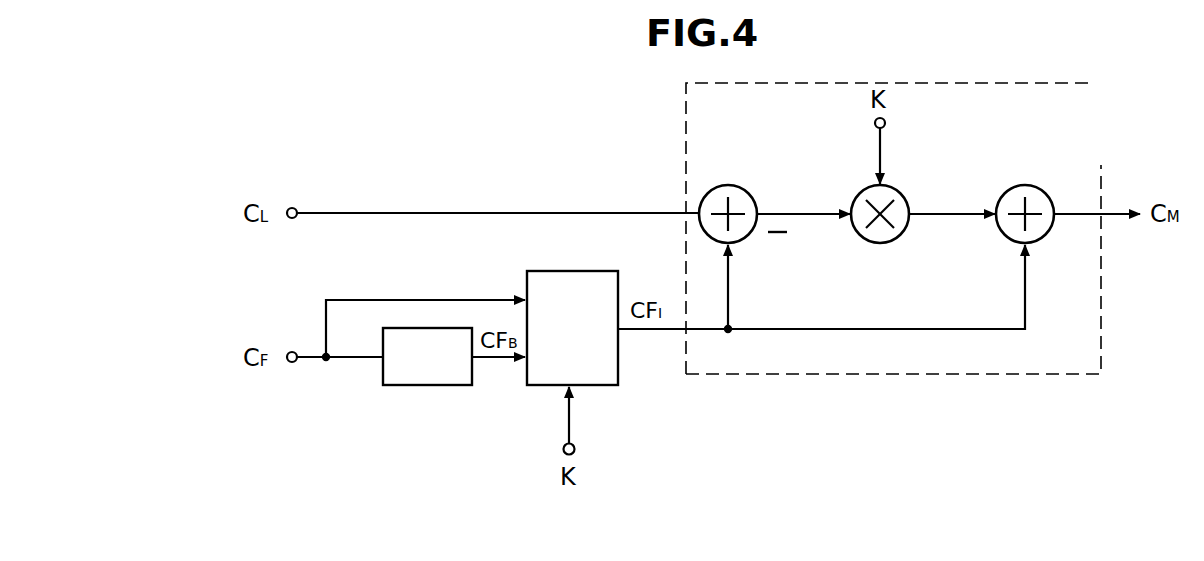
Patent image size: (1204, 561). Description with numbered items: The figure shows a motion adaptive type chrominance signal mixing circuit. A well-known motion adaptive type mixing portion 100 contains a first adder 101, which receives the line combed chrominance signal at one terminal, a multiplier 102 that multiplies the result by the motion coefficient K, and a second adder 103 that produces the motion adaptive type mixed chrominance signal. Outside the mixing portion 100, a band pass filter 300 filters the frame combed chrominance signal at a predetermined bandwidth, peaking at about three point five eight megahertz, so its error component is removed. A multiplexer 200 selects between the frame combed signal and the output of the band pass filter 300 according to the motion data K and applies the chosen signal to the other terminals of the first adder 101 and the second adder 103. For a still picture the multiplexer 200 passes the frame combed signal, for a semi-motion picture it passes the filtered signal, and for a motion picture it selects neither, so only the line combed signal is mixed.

The motion adaptive type mixing portion 100 is at (912, 375).
The first adder 101 is at (752, 188).
The multiplier 102 is at (906, 188).
The second adder 103 is at (1050, 188).
The multiplexer 200 is at (565, 270).
The band pass filter 300 is at (424, 386).